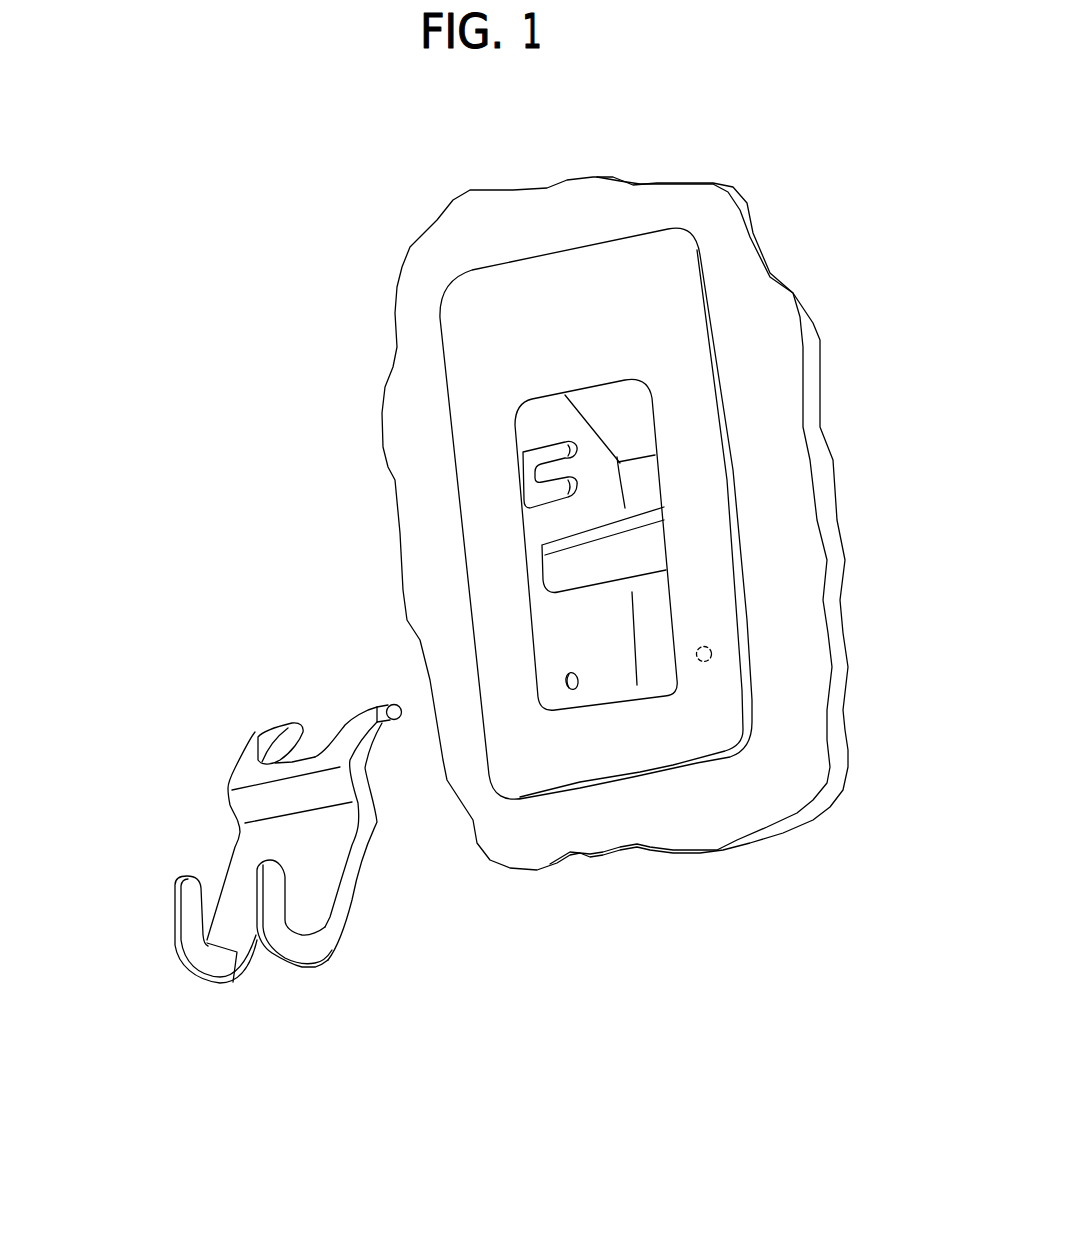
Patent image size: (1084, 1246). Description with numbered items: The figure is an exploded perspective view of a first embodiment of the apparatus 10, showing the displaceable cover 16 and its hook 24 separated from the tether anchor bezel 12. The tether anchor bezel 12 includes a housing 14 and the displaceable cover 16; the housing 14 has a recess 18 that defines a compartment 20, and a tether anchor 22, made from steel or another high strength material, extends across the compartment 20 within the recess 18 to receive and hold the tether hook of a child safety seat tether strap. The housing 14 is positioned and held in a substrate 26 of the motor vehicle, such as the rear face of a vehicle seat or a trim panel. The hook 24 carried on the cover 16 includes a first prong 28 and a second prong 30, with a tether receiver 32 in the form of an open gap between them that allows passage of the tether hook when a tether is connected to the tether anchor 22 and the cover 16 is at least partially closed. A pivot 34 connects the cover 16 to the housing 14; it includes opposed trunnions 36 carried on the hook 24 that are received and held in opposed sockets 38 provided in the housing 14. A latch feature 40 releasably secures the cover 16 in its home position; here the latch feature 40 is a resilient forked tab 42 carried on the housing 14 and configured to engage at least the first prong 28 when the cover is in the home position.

The apparatus 10 is at (503, 247).
The tether anchor bezel 12 is at (453, 547).
The housing 14 is at (683, 357).
The displaceable cover 16 is at (242, 860).
The recess 18 is at (677, 632).
The compartment 20 is at (618, 668).
The tether anchor 22 is at (637, 540).
The hook 24 is at (177, 990).
The substrate 26 is at (787, 525).
The first prong 28 is at (178, 902).
The second prong 30 is at (277, 893).
The tether receiver 32 is at (238, 927).
The pivot 34 is at (438, 678).
The trunnions 36 is at (383, 703).
The sockets 38 is at (565, 688).
The latch feature 40 is at (498, 448).
The resilient forked tab 42 is at (578, 483).